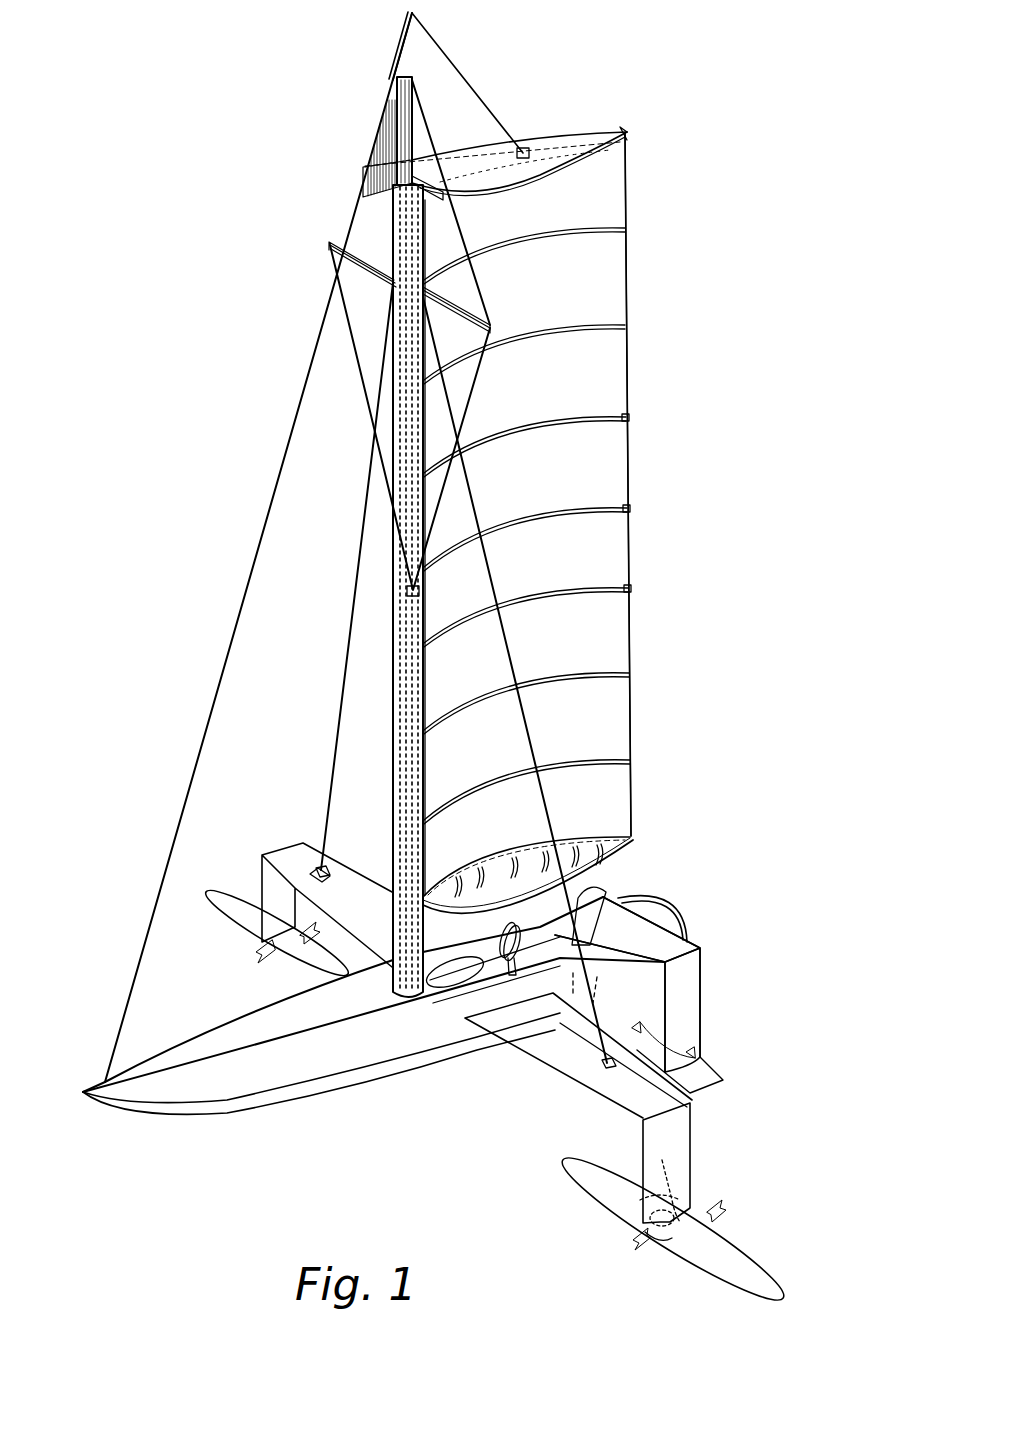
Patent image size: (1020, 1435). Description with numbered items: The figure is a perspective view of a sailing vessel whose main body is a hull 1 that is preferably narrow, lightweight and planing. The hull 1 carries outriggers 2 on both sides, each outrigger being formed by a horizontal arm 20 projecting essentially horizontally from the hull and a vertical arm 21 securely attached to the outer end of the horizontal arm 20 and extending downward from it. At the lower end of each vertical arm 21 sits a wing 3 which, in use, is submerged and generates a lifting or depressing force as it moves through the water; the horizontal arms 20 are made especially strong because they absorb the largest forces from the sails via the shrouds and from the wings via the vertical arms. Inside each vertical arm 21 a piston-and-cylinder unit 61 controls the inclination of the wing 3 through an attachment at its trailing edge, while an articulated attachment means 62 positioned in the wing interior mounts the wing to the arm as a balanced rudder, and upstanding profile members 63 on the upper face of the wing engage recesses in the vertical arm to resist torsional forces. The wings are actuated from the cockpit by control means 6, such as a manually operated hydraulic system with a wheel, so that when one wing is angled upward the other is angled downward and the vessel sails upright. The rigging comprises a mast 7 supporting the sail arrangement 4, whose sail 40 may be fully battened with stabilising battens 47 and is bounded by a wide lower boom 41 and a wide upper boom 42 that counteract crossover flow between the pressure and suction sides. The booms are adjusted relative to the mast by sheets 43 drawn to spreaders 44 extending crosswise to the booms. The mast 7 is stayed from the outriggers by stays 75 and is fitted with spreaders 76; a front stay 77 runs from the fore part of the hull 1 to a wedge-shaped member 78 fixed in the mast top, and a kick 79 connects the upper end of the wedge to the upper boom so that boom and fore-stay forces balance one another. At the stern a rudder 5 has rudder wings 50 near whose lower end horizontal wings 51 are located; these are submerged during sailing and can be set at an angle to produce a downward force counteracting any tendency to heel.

The hull 1 is at (248, 1088).
The outriggers 2 is at (290, 860).
The wings 3 is at (235, 905).
The wing sail 4 is at (632, 397).
The rudder 5 is at (710, 985).
The control means 6 is at (508, 950).
The mast 7 is at (408, 512).
The horizontal arms 20 is at (578, 1048).
The vertical arms 21 is at (672, 1130).
The sail 40 is at (600, 356).
The lower boom 41 is at (590, 870).
The upper boom 42 is at (629, 136).
The sheets 43 is at (470, 198).
The spreaders 44 is at (392, 192).
The battens 47 is at (556, 515).
The rudder wings 50 is at (700, 1020).
The rudder wings (horizontal) 51 is at (710, 1070).
The piston-and-cylinder unit 61 is at (690, 1178).
The attachment means 62 is at (648, 1243).
The profile members 63 is at (650, 1215).
The stays 75 is at (345, 640).
The spreaders 76 is at (480, 295).
The front stay 77 is at (218, 655).
The wedge-shaped member 78 is at (380, 150).
The kick 79 is at (484, 105).